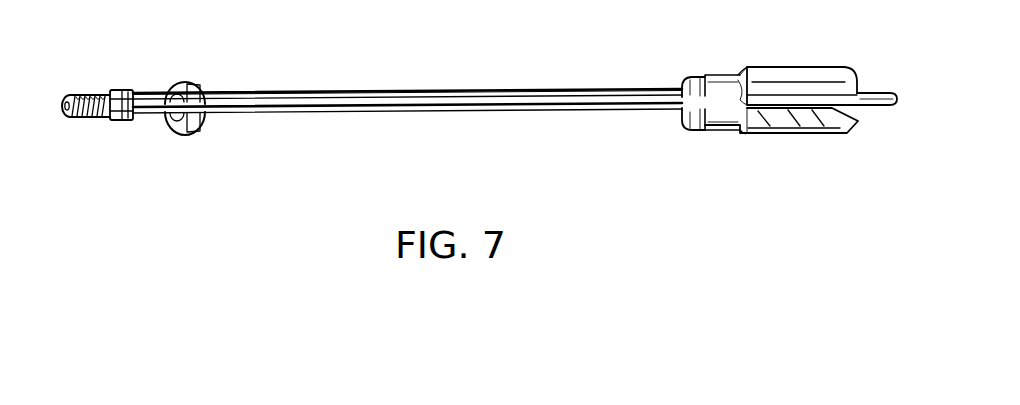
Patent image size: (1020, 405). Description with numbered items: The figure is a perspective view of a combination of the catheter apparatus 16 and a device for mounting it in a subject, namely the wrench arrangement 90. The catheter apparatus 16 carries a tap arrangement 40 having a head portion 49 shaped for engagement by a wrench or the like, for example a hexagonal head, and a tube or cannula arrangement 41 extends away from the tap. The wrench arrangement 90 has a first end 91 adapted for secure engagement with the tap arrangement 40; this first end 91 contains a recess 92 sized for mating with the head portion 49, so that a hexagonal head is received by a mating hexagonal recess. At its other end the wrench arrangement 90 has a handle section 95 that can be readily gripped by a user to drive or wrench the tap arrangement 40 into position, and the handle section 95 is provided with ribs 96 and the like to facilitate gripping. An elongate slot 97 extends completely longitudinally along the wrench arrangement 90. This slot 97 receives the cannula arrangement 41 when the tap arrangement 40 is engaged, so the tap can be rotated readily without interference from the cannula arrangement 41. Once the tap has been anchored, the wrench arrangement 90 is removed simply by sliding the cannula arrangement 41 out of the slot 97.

The apparatus 16 is at (152, 93).
The tap arrangement 40 is at (96, 94).
The tube or cannula arrangement 41 is at (151, 110).
The head portion 49 is at (126, 120).
The wrench arrangement 90 is at (522, 89).
The first end 91 is at (193, 81).
The recess 92 is at (181, 126).
The handle section 95 is at (765, 72).
The ribs 96 is at (847, 90).
The elongate slot 97 is at (206, 127).